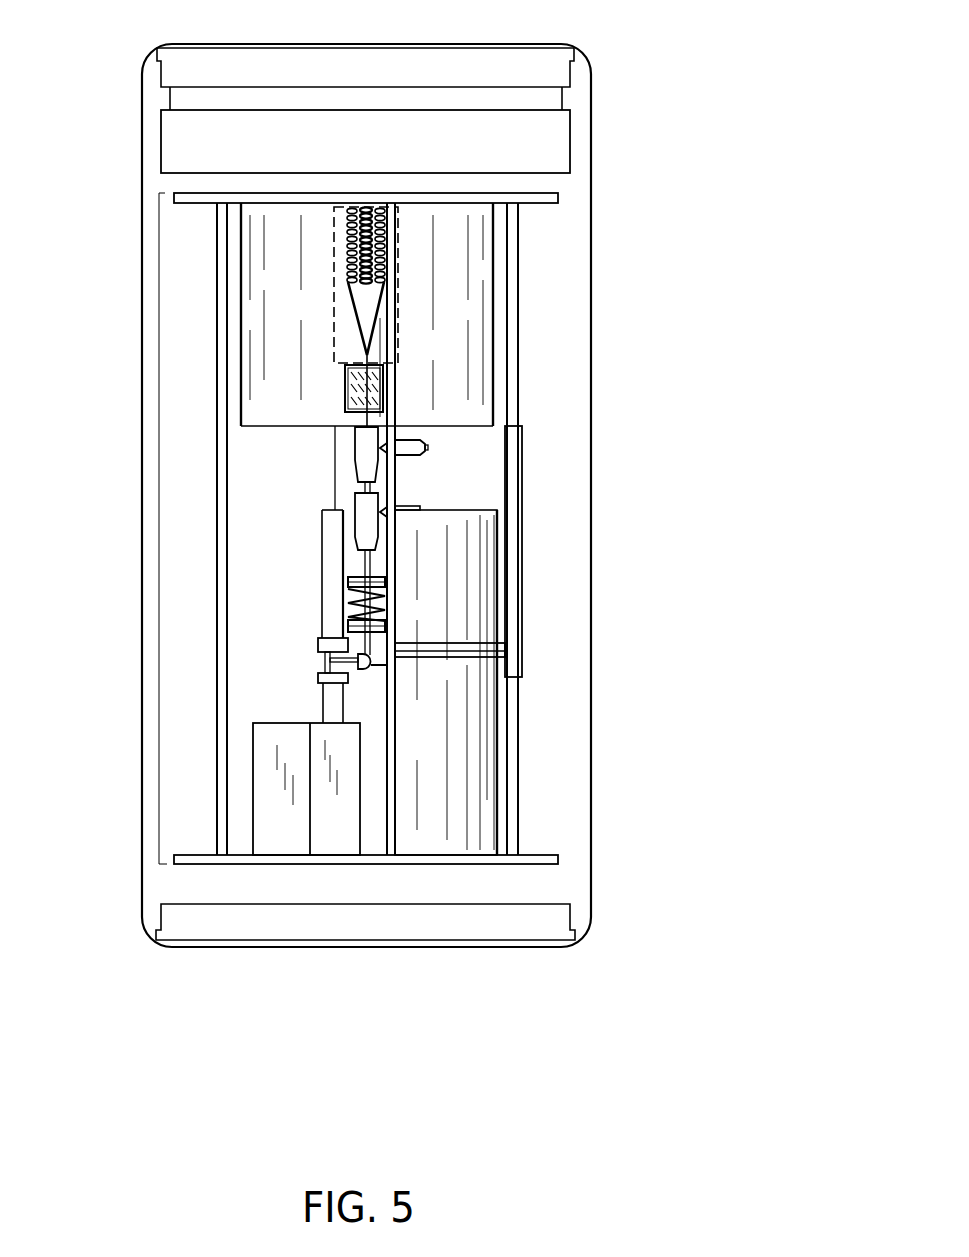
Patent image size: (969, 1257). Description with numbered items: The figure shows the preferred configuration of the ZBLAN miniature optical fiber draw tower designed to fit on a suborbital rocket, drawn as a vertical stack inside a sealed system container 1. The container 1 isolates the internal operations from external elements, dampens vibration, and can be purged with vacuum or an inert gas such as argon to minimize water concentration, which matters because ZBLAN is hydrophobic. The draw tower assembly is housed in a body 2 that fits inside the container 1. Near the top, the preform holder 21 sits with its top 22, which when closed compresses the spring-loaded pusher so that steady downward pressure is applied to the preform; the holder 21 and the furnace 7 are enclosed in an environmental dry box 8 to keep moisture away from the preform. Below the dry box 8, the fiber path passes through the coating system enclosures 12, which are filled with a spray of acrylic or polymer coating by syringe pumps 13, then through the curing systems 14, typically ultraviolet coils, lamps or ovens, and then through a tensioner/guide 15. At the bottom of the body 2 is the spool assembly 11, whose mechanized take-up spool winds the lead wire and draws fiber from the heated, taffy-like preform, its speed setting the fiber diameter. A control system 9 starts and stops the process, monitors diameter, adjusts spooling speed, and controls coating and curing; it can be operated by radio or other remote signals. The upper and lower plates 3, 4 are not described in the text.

The system container 1 is at (140, 162).
The body 2 is at (157, 529).
The upper support plate 3 is at (483, 196).
The lower support plate 4 is at (497, 858).
The furnace 7 is at (342, 382).
The environmental dry box 8 is at (465, 318).
The control system 9 is at (253, 788).
The spool assembly 11 is at (500, 737).
The coating system enclosures 12 is at (362, 455).
The syringe pumps 13 is at (430, 508).
The curing systems 14 is at (338, 607).
The tensioner/guide 15 is at (301, 666).
The preform holder 21 is at (342, 312).
The top of the preform holder 22 is at (575, 139).